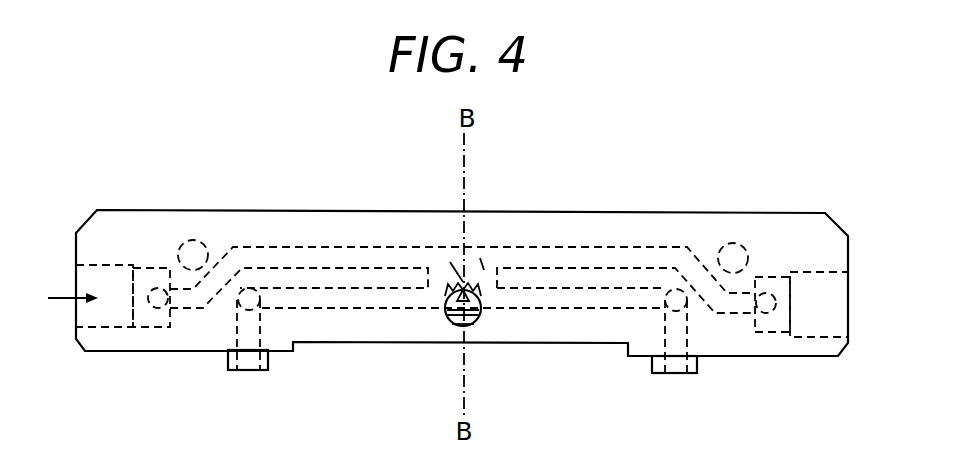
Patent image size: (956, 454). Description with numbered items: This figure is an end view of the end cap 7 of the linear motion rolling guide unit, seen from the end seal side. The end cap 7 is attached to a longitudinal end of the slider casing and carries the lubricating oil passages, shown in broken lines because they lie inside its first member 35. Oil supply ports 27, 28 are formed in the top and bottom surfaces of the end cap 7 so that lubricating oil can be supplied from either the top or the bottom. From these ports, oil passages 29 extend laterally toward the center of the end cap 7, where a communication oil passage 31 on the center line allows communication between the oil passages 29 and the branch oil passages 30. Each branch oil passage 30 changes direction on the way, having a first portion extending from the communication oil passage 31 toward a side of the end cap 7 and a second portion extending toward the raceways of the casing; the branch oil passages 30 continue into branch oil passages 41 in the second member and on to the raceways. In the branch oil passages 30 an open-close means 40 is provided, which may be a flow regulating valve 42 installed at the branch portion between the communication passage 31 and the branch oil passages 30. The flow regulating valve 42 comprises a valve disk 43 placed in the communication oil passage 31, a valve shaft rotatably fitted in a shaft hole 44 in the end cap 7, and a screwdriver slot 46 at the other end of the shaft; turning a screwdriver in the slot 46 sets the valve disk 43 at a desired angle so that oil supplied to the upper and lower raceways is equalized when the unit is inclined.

The end cap 7 is at (718, 210).
The oil supply port 27 is at (100, 262).
The oil supply port 28 is at (809, 336).
The oil passage 29 is at (273, 250).
The branch oil passage 30 is at (353, 308).
The communication oil passage 31 is at (480, 258).
The first member 35 is at (140, 212).
The open-close means 40 is at (467, 330).
The branch oil passage 41 is at (430, 297).
The flow regulating valve 42 is at (450, 262).
The valve disk 43 is at (478, 294).
The shaft hole 44 is at (229, 372).
The screwdriver slot 46 is at (455, 330).